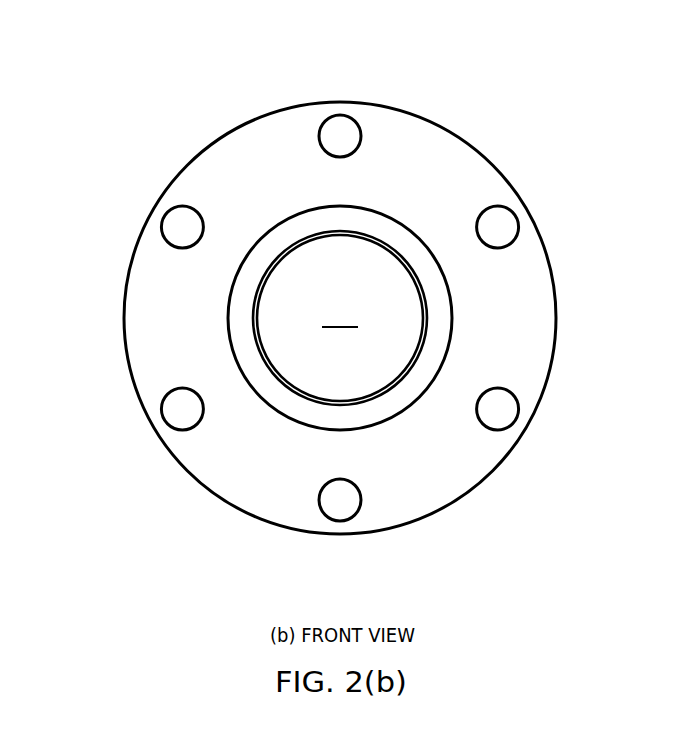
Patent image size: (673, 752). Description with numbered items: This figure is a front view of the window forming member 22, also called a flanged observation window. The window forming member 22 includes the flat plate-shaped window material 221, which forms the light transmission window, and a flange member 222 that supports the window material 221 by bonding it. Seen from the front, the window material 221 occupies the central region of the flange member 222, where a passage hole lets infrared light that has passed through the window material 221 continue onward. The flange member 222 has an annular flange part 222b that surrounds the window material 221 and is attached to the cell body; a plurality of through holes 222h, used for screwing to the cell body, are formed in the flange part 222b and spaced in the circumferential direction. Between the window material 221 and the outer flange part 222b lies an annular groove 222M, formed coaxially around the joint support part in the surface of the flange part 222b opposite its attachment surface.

The window forming member 22 is at (357, 300).
The flange member 222 is at (340, 102).
The flange part 222b is at (452, 165).
The through holes 222h is at (168, 210).
The annular groove 222M is at (452, 315).
The window material 221 is at (307, 363).